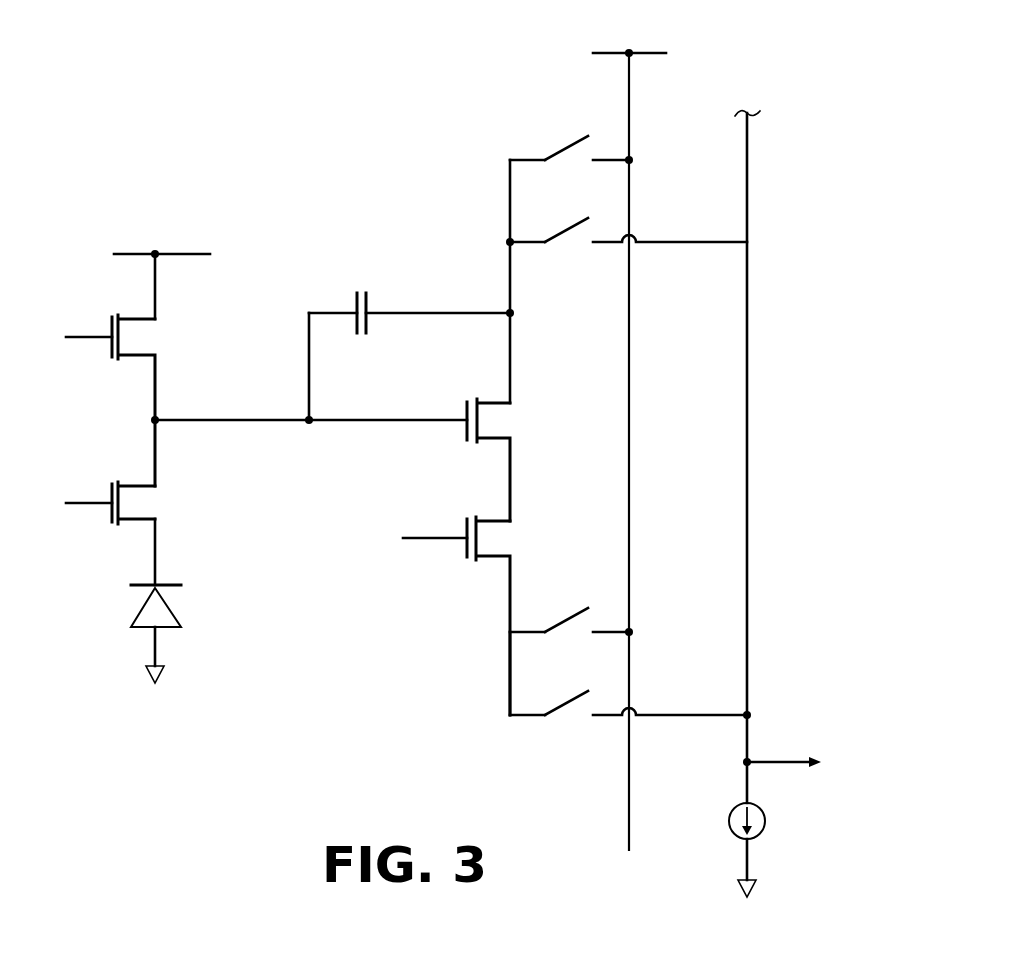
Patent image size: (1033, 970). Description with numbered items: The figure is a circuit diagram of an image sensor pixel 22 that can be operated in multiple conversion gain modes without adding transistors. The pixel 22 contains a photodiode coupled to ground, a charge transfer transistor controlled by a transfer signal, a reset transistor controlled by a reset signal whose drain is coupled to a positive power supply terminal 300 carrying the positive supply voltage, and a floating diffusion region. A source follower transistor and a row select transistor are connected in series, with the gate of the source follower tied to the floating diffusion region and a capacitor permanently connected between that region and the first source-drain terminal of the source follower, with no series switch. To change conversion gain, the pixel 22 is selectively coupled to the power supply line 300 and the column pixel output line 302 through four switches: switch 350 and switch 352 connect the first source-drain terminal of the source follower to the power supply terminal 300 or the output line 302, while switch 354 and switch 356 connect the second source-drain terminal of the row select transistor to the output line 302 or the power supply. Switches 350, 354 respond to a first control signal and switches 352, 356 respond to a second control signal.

The image sensor pixel 22 is at (148, 130).
The positive power supply terminal 300 is at (193, 256).
The column pixel output line 302 is at (748, 415).
The switch 350 is at (577, 156).
The switch 352 is at (577, 238).
The switch 354 is at (577, 711).
The switch 356 is at (577, 628).